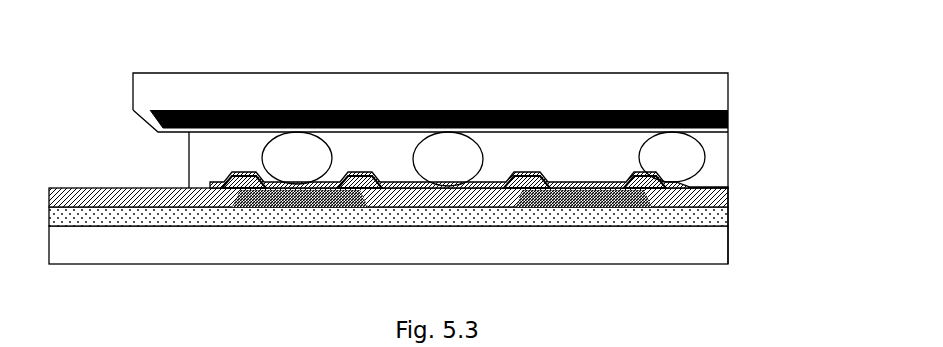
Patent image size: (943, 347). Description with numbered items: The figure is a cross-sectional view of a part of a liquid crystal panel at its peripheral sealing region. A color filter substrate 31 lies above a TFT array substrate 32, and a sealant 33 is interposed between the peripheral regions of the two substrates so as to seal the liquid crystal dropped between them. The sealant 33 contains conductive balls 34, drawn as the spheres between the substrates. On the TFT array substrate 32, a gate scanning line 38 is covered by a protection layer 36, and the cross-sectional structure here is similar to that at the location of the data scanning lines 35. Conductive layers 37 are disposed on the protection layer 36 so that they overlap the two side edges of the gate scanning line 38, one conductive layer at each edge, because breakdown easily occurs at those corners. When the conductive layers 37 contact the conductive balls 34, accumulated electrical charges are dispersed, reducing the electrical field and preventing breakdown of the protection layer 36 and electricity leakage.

The color filter substrate 31 is at (740, 102).
The TFT array substrate 32 is at (738, 232).
The sealant 33 is at (487, 181).
The conductive balls 34 is at (438, 172).
The data scanning lines 35 is at (260, 200).
The protection layer 36 is at (658, 202).
The conductive layers 37 is at (368, 184).
The gate scanning line 38 is at (700, 187).